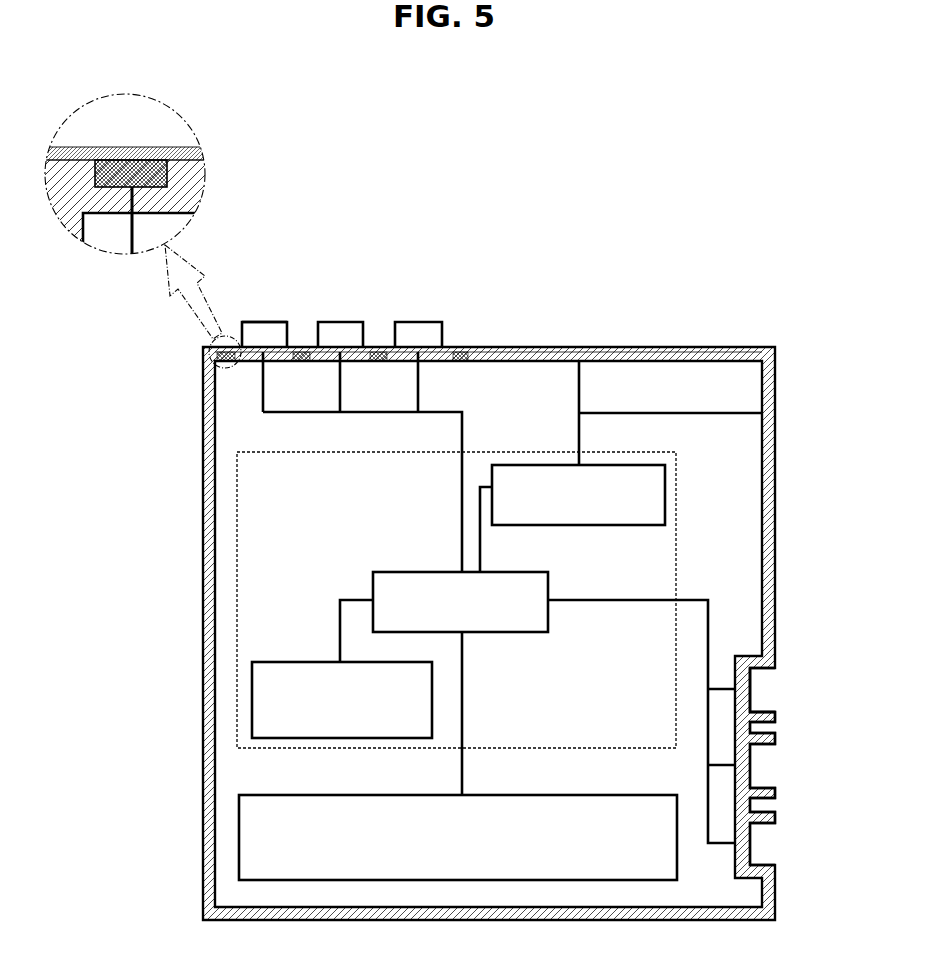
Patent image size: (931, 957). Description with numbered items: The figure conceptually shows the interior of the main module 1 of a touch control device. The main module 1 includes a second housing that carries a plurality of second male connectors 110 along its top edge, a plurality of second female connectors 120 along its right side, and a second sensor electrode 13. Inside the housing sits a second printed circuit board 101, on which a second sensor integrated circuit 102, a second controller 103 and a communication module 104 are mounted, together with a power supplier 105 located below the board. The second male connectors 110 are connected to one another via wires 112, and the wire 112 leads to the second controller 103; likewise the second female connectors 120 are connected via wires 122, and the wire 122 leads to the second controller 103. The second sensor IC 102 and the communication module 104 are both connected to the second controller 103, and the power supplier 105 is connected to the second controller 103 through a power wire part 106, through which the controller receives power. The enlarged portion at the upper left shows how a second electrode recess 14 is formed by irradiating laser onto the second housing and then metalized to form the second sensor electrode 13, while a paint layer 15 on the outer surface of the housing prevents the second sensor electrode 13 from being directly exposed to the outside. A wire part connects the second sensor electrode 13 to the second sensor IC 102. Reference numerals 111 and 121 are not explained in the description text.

The main module 1 is at (176, 367).
The second sensor electrode 13 is at (166, 173).
The second electrode recess 14 is at (120, 173).
The paint layer 15 is at (170, 156).
The second printed circuit board 101 is at (238, 480).
The second sensor integrated circuit 102 is at (583, 526).
The second controller 103 is at (408, 571).
The communication module 104 is at (312, 662).
The power supplier 105 is at (582, 795).
The power wire part 106 is at (465, 768).
The second male connector 110 is at (286, 336).
The button cap 111 is at (270, 321).
The wire 112 is at (419, 385).
The second female connector 120 is at (762, 690).
The connector terminal 121 is at (753, 677).
The wire 122 is at (710, 620).